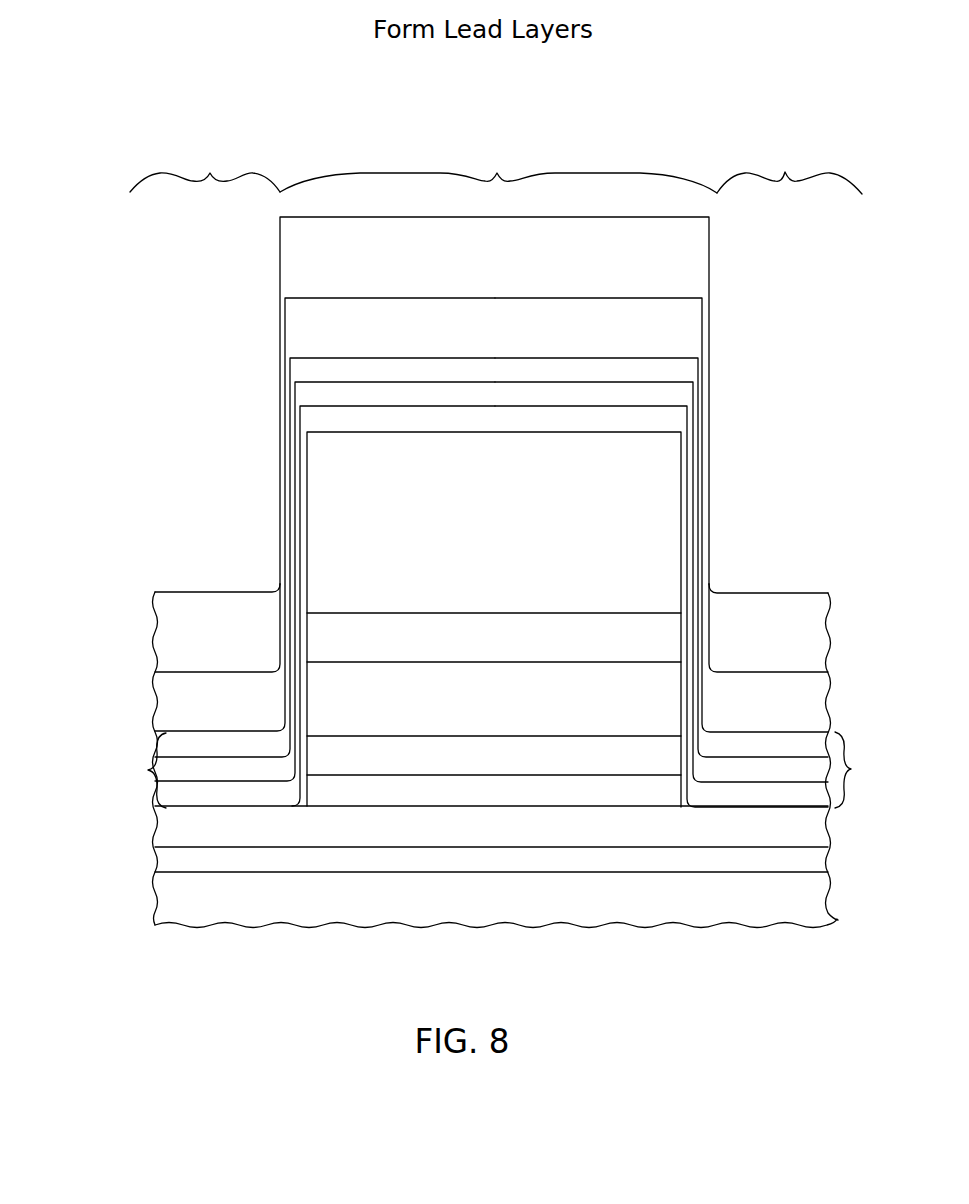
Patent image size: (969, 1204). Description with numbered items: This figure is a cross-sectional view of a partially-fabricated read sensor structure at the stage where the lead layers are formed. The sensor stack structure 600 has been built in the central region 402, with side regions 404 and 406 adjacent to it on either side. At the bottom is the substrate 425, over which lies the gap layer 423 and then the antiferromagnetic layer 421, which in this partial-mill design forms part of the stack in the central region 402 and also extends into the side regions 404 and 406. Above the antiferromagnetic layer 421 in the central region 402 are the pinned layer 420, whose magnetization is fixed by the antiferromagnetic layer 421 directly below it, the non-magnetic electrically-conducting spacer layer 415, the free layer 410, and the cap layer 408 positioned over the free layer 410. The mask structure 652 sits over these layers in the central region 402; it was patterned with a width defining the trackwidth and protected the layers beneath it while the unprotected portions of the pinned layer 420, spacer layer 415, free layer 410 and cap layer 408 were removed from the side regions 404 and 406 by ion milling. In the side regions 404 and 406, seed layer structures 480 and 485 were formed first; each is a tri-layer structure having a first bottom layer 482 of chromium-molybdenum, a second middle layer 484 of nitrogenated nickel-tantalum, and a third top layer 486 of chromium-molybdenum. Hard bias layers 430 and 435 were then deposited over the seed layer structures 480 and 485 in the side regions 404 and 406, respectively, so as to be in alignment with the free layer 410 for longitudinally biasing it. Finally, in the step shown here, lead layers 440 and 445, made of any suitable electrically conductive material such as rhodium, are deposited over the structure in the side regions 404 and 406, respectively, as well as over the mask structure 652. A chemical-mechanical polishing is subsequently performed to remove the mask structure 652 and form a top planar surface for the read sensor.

The side region 404 is at (205, 168).
The central region 402 is at (498, 169).
The side region 406 is at (789, 169).
The mask structure 652 is at (509, 592).
The cap layer 408 is at (533, 652).
The free layer 410 is at (536, 716).
The spacer layer 415 is at (552, 772).
The pinned layer 420 is at (548, 802).
The antiferromagnetic (AFM) layer 421 is at (534, 839).
The gap layer 423 is at (534, 869).
The substrate 425 is at (570, 909).
The lead layer 440 is at (233, 663).
The lead layer 445 is at (783, 666).
The hard bias layer 430 is at (233, 722).
The hard bias layer 435 is at (783, 724).
The seed layer structure 480 is at (134, 770).
The seed layer structure 485 is at (692, 583).
The third (top) layer 486 is at (172, 742).
The second (middle) layer 484 is at (172, 765).
The first (bottom) layer 482 is at (170, 790).
The sensor stack structure 600 is at (642, 997).